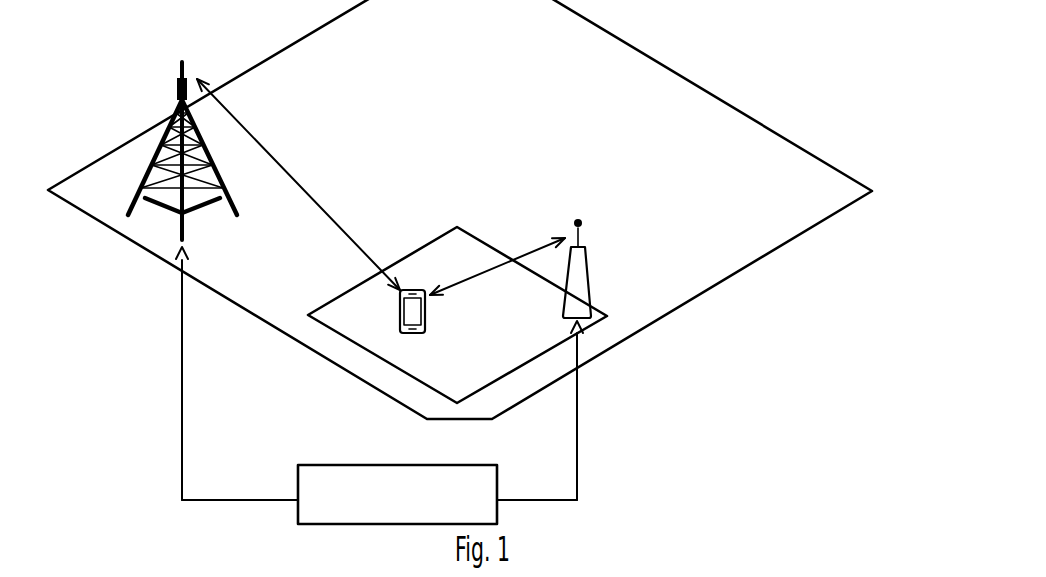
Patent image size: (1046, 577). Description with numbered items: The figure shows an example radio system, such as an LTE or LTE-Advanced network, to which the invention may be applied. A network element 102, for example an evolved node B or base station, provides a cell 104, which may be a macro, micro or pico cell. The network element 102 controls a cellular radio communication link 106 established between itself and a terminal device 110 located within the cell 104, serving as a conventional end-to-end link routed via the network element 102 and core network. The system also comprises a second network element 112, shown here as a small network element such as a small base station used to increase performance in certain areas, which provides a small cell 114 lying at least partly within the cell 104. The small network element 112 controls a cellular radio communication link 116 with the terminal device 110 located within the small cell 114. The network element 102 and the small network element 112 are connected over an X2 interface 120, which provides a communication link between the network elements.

The network element 102 is at (178, 90).
The cell 104 is at (102, 225).
The cellular radio communication link 106 is at (257, 140).
The terminal device 110 is at (414, 333).
The second network element 112 is at (588, 255).
The cell 114 is at (457, 227).
The cellular radio communication link 116 is at (532, 250).
The X2 interface 120 is at (346, 511).